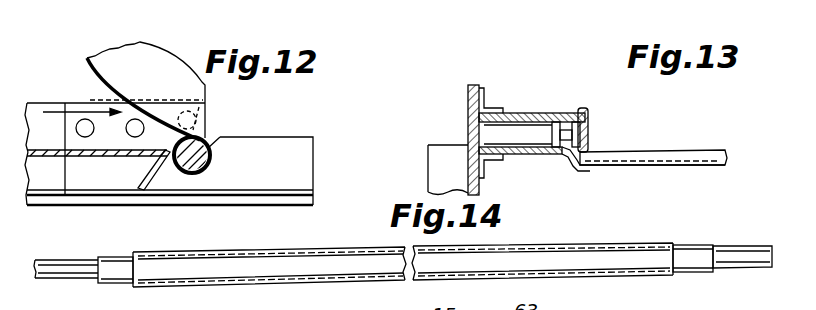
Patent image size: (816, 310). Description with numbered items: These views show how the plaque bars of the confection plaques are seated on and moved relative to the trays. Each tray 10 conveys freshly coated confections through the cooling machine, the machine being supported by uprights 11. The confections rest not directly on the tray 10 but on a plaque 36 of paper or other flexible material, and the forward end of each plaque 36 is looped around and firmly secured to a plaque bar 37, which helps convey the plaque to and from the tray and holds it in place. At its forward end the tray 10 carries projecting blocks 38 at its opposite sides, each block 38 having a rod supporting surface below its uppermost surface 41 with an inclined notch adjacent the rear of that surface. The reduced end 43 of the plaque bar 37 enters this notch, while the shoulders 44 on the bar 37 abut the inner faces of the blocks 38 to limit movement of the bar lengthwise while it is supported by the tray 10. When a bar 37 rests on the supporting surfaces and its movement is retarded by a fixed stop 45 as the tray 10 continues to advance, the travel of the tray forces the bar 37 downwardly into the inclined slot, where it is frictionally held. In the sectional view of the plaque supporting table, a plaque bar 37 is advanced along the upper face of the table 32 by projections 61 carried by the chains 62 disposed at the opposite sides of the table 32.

In FIG. 12, the tray 10 is at (50, 154).
In FIG. 13, the upright 11 is at (440, 160).
In FIG. 13, the table 32 is at (688, 166).
In FIG. 14, the plaque 36 is at (250, 251).
In FIG. 12, the plaque bar 37 is at (208, 138).
In FIG. 13, the plaque bar 37 is at (655, 152).
In FIG. 14, the plaque bar 37 is at (605, 257).
In FIG. 12, the projecting block 38 is at (301, 137).
In FIG. 12, the uppermost surface 41 is at (88, 103).
In FIG. 14, the reduced end 43 is at (60, 279).
In FIG. 14, the shoulder 44 is at (96, 258).
In FIG. 12, the fixed stop 45 is at (167, 62).
In FIG. 13, the projection 61 is at (587, 150).
In FIG. 13, the chain 62 is at (581, 110).